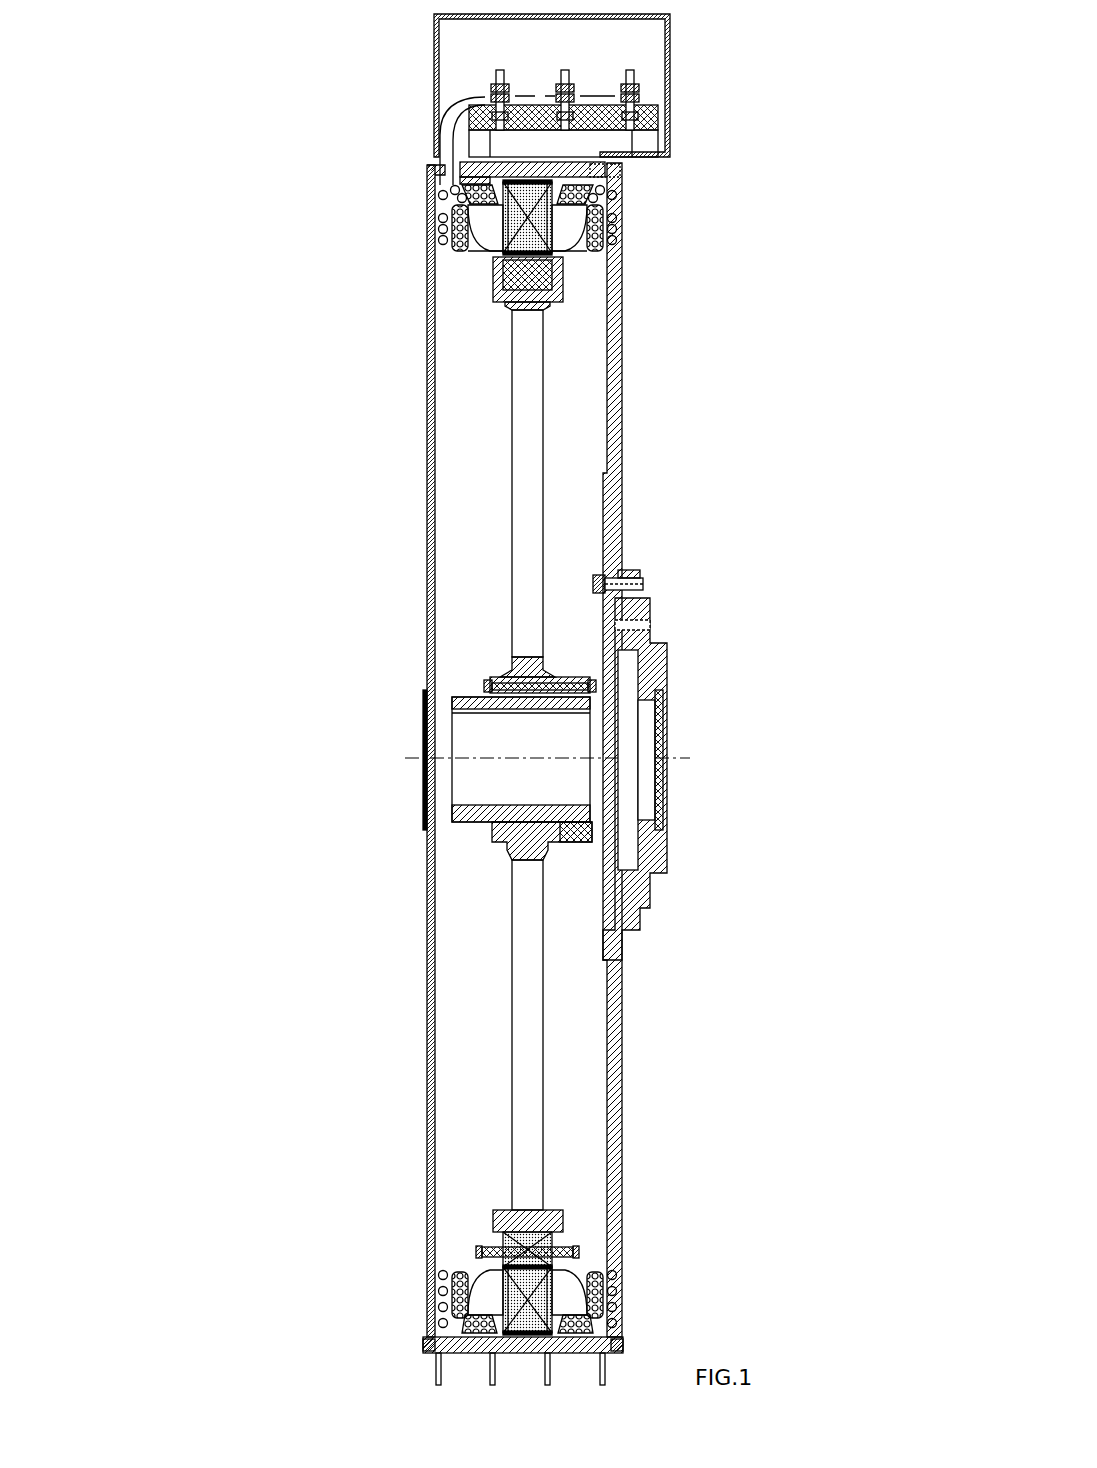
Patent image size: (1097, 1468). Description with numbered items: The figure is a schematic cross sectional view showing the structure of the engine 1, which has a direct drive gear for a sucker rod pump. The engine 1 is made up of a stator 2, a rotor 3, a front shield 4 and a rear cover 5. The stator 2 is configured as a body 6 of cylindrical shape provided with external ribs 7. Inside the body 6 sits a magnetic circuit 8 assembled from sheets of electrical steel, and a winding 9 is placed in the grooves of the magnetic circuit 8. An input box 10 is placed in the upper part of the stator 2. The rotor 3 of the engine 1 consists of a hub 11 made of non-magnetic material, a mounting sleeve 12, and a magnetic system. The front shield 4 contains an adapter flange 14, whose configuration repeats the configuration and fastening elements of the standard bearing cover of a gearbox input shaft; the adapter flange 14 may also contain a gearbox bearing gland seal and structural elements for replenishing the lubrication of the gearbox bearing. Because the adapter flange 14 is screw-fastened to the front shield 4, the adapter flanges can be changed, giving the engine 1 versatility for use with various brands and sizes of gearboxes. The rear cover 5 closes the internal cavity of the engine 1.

The engine 1 is at (282, 98).
The stator 2 is at (624, 206).
The rotor 3 is at (520, 445).
The front shield 4 is at (613, 510).
The rear cover 5 is at (427, 303).
The body 6 is at (600, 1330).
The external ribs 7 is at (425, 1347).
The magnetic circuit 8 is at (537, 207).
The winding 9 is at (597, 240).
The input box 10 is at (672, 92).
The hub 11 is at (505, 854).
The mounting sleeve 12 is at (575, 823).
The adapter flange 14 is at (650, 607).